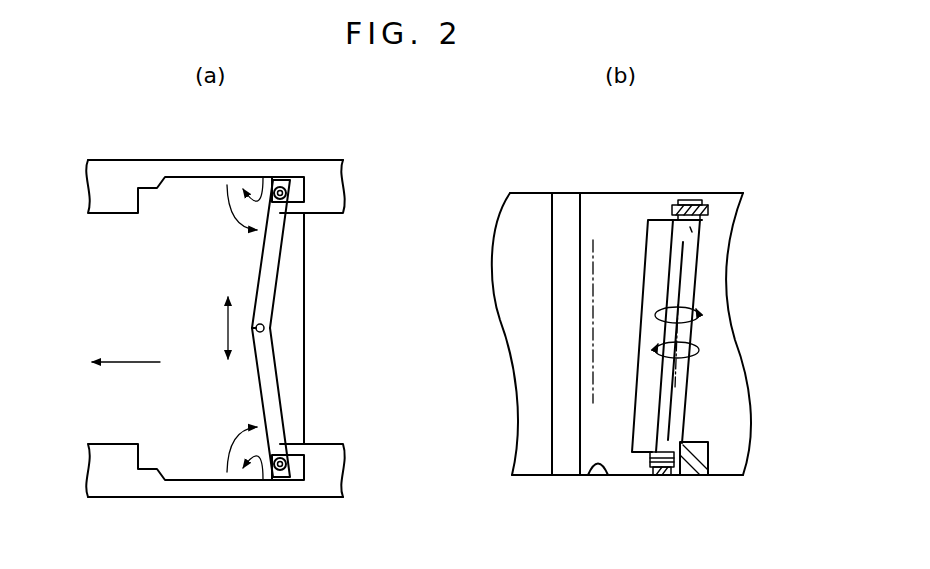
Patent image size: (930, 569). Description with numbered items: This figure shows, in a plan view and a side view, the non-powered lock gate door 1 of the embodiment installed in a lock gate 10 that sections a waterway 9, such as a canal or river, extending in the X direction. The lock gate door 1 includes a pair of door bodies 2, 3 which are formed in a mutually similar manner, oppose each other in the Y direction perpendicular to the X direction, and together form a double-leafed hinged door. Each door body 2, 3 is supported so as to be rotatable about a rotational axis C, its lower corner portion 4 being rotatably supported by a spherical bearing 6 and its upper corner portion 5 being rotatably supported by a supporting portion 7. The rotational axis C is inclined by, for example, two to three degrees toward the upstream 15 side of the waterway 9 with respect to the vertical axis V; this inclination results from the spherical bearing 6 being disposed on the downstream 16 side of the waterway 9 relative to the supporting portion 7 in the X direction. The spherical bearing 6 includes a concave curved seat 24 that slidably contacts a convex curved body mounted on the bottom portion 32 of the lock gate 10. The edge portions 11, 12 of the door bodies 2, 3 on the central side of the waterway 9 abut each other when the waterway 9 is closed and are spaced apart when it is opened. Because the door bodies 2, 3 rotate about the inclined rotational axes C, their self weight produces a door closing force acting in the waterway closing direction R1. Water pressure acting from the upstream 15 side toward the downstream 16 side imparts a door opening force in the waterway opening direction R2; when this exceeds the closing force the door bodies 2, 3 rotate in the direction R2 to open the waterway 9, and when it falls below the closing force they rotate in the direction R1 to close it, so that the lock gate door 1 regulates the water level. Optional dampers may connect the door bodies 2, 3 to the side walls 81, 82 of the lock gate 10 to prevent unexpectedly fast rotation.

The lock gate door 1 is at (648, 213).
The door body 2 is at (267, 280).
The door body 3 is at (270, 375).
The lower corner portion 4 is at (673, 435).
The upper corner portion 5 is at (277, 210).
The spherical bearing 6 is at (644, 463).
The supporting portion 7 is at (285, 177).
The waterway 9 is at (122, 403).
The lock gate 10 is at (160, 156).
The edge portion 11 is at (265, 336).
The edge portion 12 is at (263, 320).
The upstream side 15 is at (416, 306).
The downstream side 16 is at (141, 306).
The concave curved seat 24 is at (667, 466).
The bottom portion 32 is at (592, 473).
The side wall 81 is at (192, 167).
The side wall 82 is at (195, 488).
The waterway closing direction R1 is at (233, 212).
The waterway opening direction R2 is at (263, 178).
The X direction X is at (126, 342).
The Y direction Y is at (226, 330).
The vertical axis V is at (595, 270).
The rotational axis C is at (688, 387).